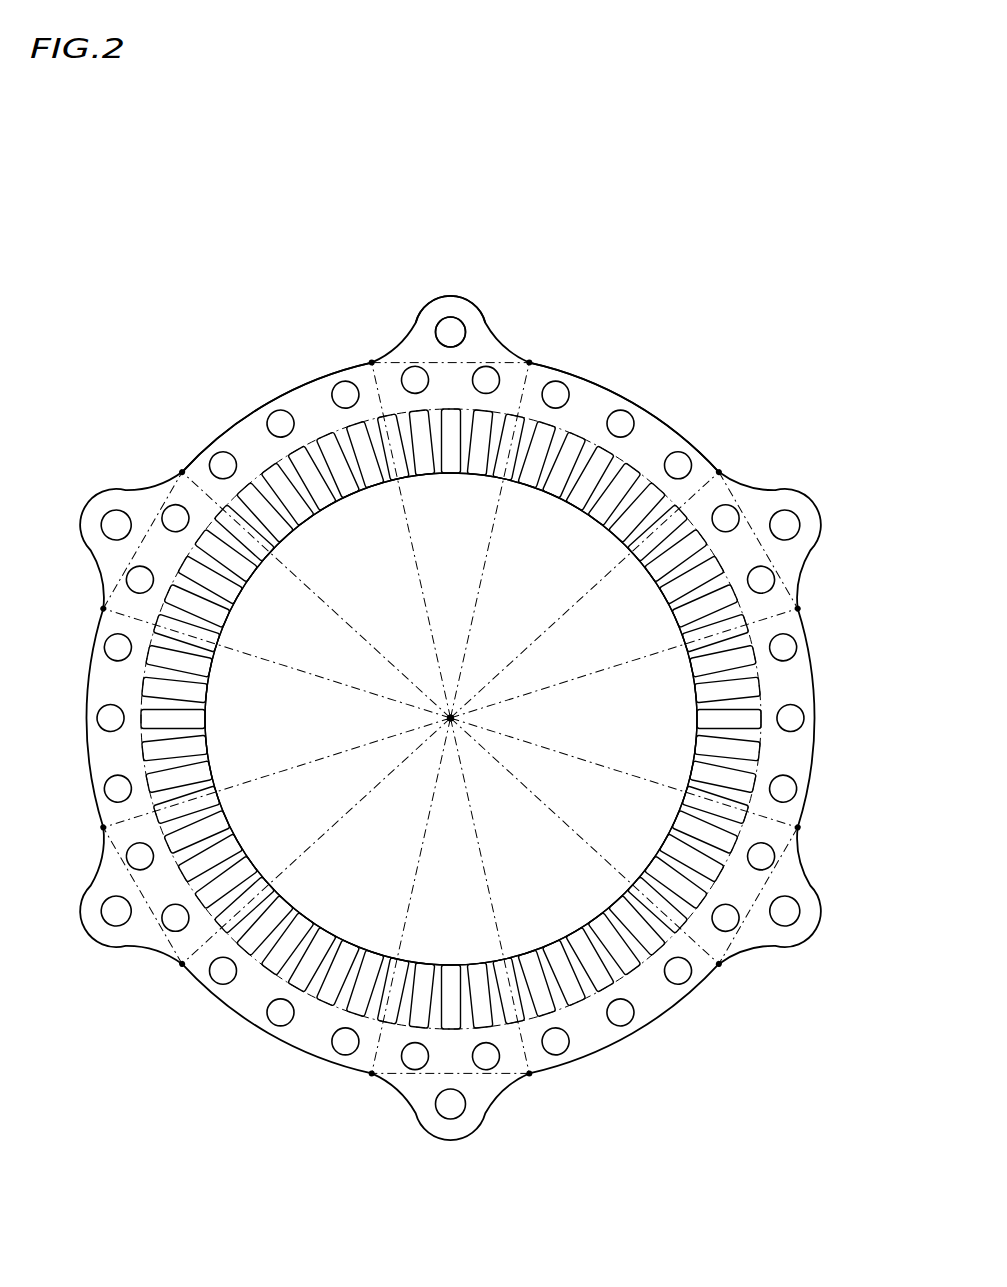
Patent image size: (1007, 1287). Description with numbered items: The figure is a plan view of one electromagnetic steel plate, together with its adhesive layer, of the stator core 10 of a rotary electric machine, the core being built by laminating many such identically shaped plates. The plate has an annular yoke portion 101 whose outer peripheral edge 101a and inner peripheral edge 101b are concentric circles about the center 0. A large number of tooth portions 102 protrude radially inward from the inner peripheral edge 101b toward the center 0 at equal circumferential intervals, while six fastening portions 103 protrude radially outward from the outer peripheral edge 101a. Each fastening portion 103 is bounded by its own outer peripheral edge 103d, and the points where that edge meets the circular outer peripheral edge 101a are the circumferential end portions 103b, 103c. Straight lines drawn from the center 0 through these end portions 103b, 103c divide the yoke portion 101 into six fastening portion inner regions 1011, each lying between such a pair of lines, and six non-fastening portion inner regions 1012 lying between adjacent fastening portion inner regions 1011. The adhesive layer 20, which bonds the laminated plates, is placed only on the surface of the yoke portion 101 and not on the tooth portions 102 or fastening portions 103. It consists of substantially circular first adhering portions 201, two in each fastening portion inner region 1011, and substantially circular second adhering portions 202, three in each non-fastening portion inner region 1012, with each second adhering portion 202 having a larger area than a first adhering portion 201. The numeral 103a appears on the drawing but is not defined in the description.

The stator core 10 is at (143, 199).
The yoke portion 101 is at (330, 192).
The outer peripheral edge 101a is at (540, 352).
The inner peripheral edge 101b is at (612, 392).
The non-fastening portion inner region 1012 is at (262, 398).
The fastening portion inner region 1011 is at (470, 300).
The fastening portion 103 is at (460, 304).
The mounting hole 103a is at (440, 330).
The circumferential end portion 103b is at (724, 471).
The circumferential end portion 103c is at (532, 362).
The outer peripheral edge of the fastening portion 103d is at (438, 303).
The tooth portion 102 is at (412, 543).
The center 0 is at (454, 722).
The adhesive layer 20 is at (400, 364).
The first adhering portion 201 is at (454, 480).
The second adhering portion 202 is at (334, 500).